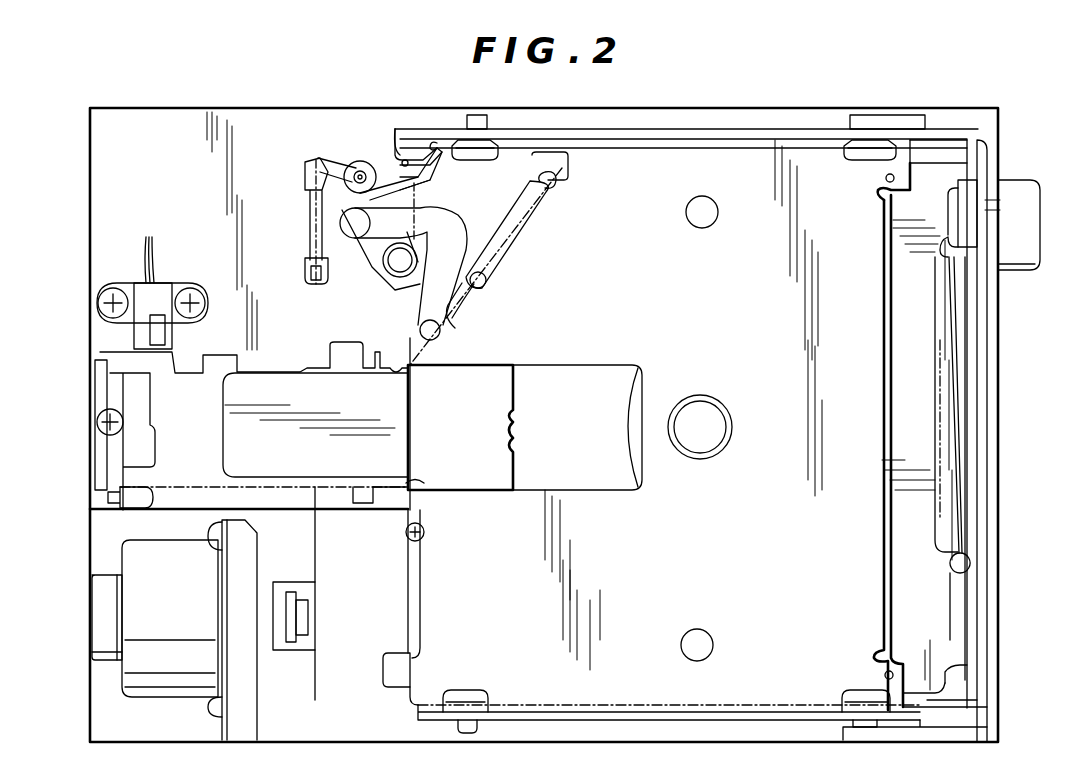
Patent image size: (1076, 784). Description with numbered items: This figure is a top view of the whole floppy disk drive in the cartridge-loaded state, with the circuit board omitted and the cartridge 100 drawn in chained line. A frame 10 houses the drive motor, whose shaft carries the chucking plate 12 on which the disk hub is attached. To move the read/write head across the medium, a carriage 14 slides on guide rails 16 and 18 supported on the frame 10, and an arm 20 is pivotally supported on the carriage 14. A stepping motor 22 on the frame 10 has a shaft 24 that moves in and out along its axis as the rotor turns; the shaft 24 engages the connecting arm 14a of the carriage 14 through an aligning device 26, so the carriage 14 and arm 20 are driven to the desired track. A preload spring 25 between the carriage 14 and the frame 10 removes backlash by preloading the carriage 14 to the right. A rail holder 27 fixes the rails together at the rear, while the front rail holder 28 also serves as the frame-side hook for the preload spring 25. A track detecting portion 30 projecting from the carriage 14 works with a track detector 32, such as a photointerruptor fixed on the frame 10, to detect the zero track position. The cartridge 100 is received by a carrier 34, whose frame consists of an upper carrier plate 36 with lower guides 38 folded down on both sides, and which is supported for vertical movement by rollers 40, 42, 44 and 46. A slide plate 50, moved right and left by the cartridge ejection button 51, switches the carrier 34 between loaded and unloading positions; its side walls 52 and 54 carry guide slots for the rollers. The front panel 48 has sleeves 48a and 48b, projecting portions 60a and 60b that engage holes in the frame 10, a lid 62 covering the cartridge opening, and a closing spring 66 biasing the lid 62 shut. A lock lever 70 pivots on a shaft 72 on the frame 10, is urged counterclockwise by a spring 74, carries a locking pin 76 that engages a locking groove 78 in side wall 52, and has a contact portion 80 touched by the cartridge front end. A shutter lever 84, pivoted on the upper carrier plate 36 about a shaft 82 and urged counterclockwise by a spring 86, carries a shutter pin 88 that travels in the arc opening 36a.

The frame 10 is at (157, 126).
The chucking plate 12 is at (622, 430).
The carriage 14 is at (98, 410).
The connecting arm 14a is at (300, 538).
The guide rail 16 is at (275, 368).
The guide rail 18 is at (333, 493).
The arm 20 is at (500, 368).
The stepping motor 22 is at (144, 680).
The shaft 24 is at (245, 640).
The preload spring 25 is at (140, 510).
The aligning device 26 is at (305, 606).
The rail holder 27 is at (95, 372).
The rail holder 28 is at (406, 552).
The track detecting portion 30 is at (175, 350).
The track detector 32 is at (110, 283).
The carrier 34 is at (740, 573).
The upper carrier plate 36 is at (870, 617).
The arc opening 36a is at (484, 286).
The lower guide 38 is at (913, 695).
The roller 40 is at (478, 118).
The roller 42 is at (872, 125).
The roller 44 is at (482, 712).
The roller 46 is at (845, 702).
The front panel 48 is at (980, 352).
The sleeve 48a is at (953, 128).
The sleeve 48b is at (947, 729).
The slide plate 50 is at (945, 335).
The cartridge ejection button 51 is at (1028, 190).
The side wall 52 is at (630, 146).
The side wall 54 is at (598, 720).
The projecting portion 60a is at (968, 302).
The projecting portion 60b is at (970, 562).
The lid 62 is at (968, 406).
The closing spring 66 is at (960, 450).
The lock lever 70 is at (358, 172).
The shaft 72 is at (320, 162).
The spring 74 is at (306, 215).
The locking pin 76 is at (405, 163).
The locking groove 78 is at (437, 143).
The contact portion 80 is at (385, 262).
The shaft 82 is at (352, 224).
The shutter lever 84 is at (447, 210).
The spring 86 is at (552, 186).
The shutter pin 88 is at (440, 336).
The cartridge 100 is at (780, 140).